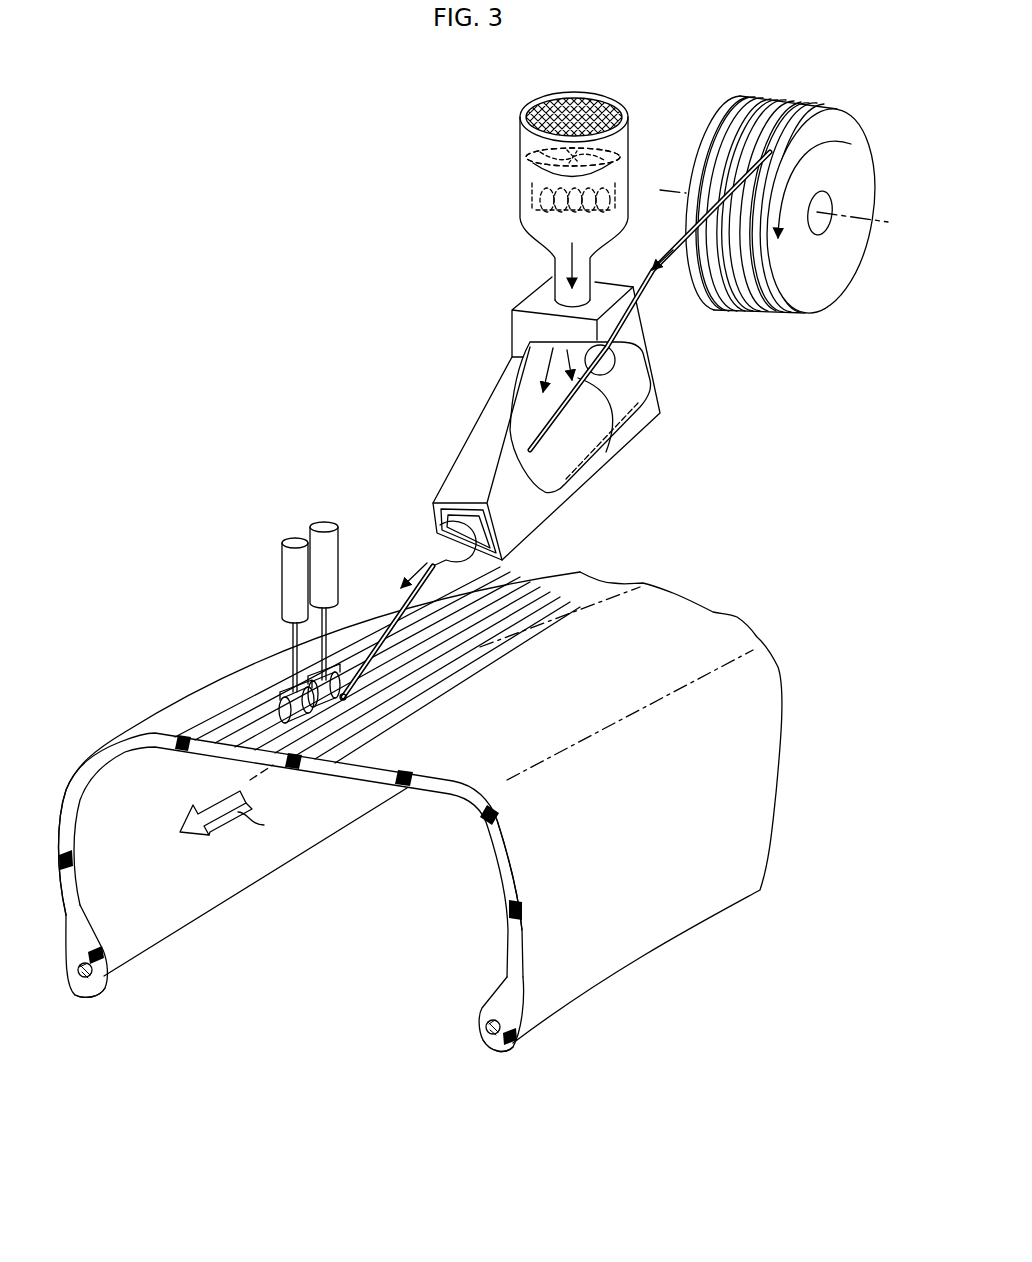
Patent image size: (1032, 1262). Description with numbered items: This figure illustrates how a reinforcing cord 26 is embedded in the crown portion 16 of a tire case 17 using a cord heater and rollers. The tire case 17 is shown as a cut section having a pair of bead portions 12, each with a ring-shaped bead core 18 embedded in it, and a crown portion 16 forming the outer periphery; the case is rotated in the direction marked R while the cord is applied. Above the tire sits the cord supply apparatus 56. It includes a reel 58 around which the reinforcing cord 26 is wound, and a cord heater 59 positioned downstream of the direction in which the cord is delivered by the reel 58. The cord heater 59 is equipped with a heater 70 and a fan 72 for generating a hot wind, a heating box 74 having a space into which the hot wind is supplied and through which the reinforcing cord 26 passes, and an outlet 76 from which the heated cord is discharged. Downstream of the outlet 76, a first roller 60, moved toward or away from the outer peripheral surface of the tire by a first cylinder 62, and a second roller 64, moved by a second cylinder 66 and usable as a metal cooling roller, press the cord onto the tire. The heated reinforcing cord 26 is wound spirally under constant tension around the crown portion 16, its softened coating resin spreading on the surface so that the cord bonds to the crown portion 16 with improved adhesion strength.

The bead portion 12 is at (82, 993).
The crown portion 16 is at (216, 722).
The tire case 17 is at (500, 887).
The bead core 18 is at (95, 977).
The reinforcing cord 26 is at (190, 714).
The cord supply apparatus 56 is at (407, 238).
The reel 58 is at (798, 280).
The cord heater 59 is at (673, 428).
The first roller 60 is at (347, 708).
The first cylinder 62 is at (327, 522).
The second roller 64 is at (313, 727).
The second cylinder 66 is at (283, 560).
The heater 70 is at (520, 211).
The fan 72 is at (620, 158).
The heating box 74 is at (490, 397).
The outlet 76 is at (432, 560).